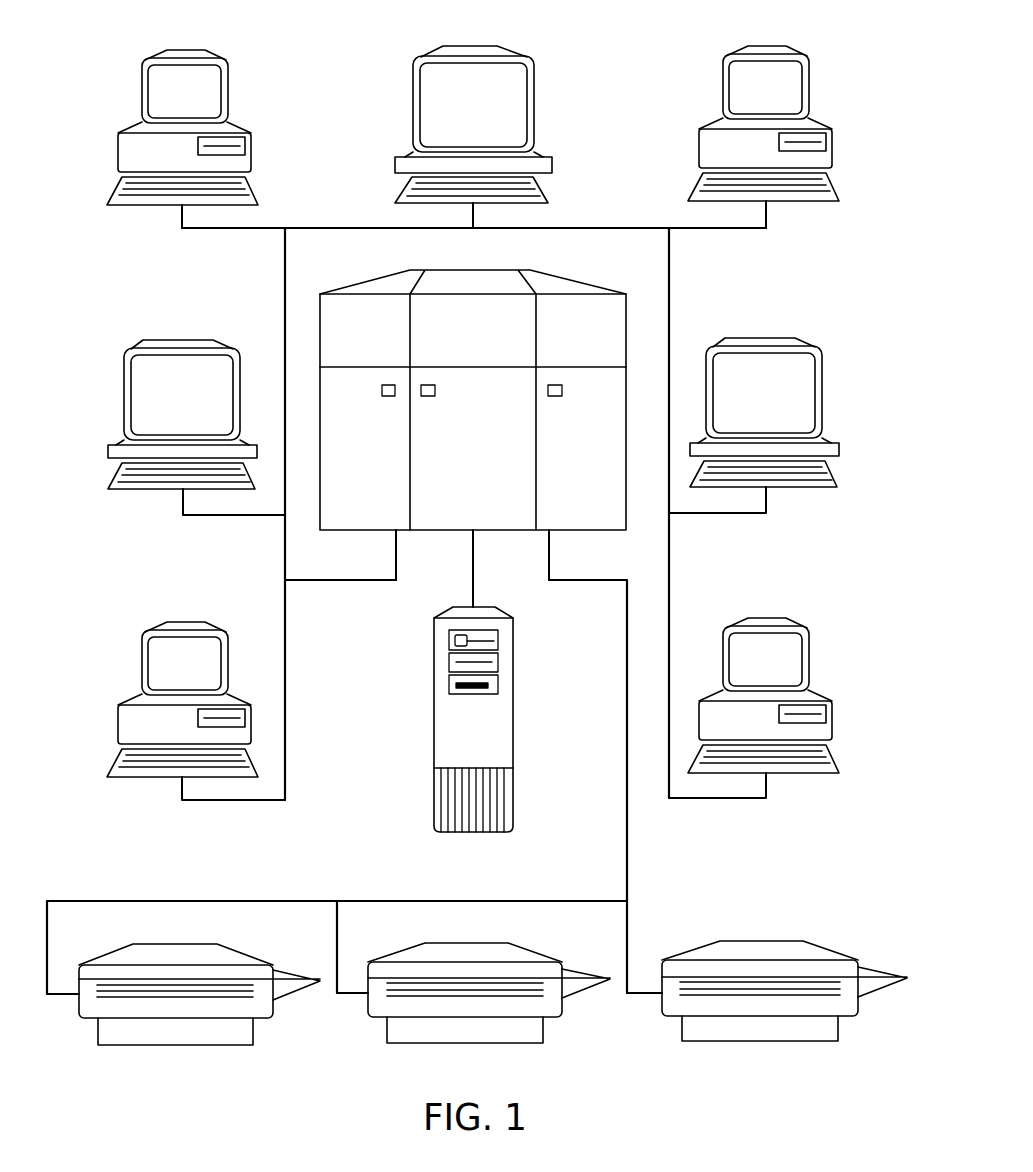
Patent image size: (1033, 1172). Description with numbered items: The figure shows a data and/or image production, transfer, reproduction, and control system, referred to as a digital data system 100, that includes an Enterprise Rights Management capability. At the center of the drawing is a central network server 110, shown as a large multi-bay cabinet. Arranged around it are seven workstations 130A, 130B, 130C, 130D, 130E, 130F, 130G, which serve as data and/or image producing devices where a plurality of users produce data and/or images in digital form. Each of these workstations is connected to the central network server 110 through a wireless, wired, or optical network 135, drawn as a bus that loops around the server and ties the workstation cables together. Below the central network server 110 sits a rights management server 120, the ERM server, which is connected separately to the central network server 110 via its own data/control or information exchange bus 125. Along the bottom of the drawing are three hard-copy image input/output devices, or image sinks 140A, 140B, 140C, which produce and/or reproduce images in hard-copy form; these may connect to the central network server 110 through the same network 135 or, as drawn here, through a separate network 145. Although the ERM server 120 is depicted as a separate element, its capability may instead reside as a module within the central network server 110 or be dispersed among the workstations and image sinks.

The digital data system 100 is at (82, 272).
The central network server 110 is at (365, 284).
The rights management server 120 is at (434, 662).
The information exchange bus 125 is at (473, 563).
The workstation 130A is at (142, 648).
The workstation 130B is at (124, 372).
The workstation 130C is at (142, 78).
The workstation 130D is at (413, 78).
The workstation 130E is at (723, 75).
The workstation 130F is at (823, 378).
The workstation 130G is at (809, 646).
The network 135 is at (285, 566).
The image sink 140A is at (253, 1030).
The image sink 140B is at (543, 1030).
The image sink 140C is at (838, 1028).
The separate network 145 is at (85, 901).